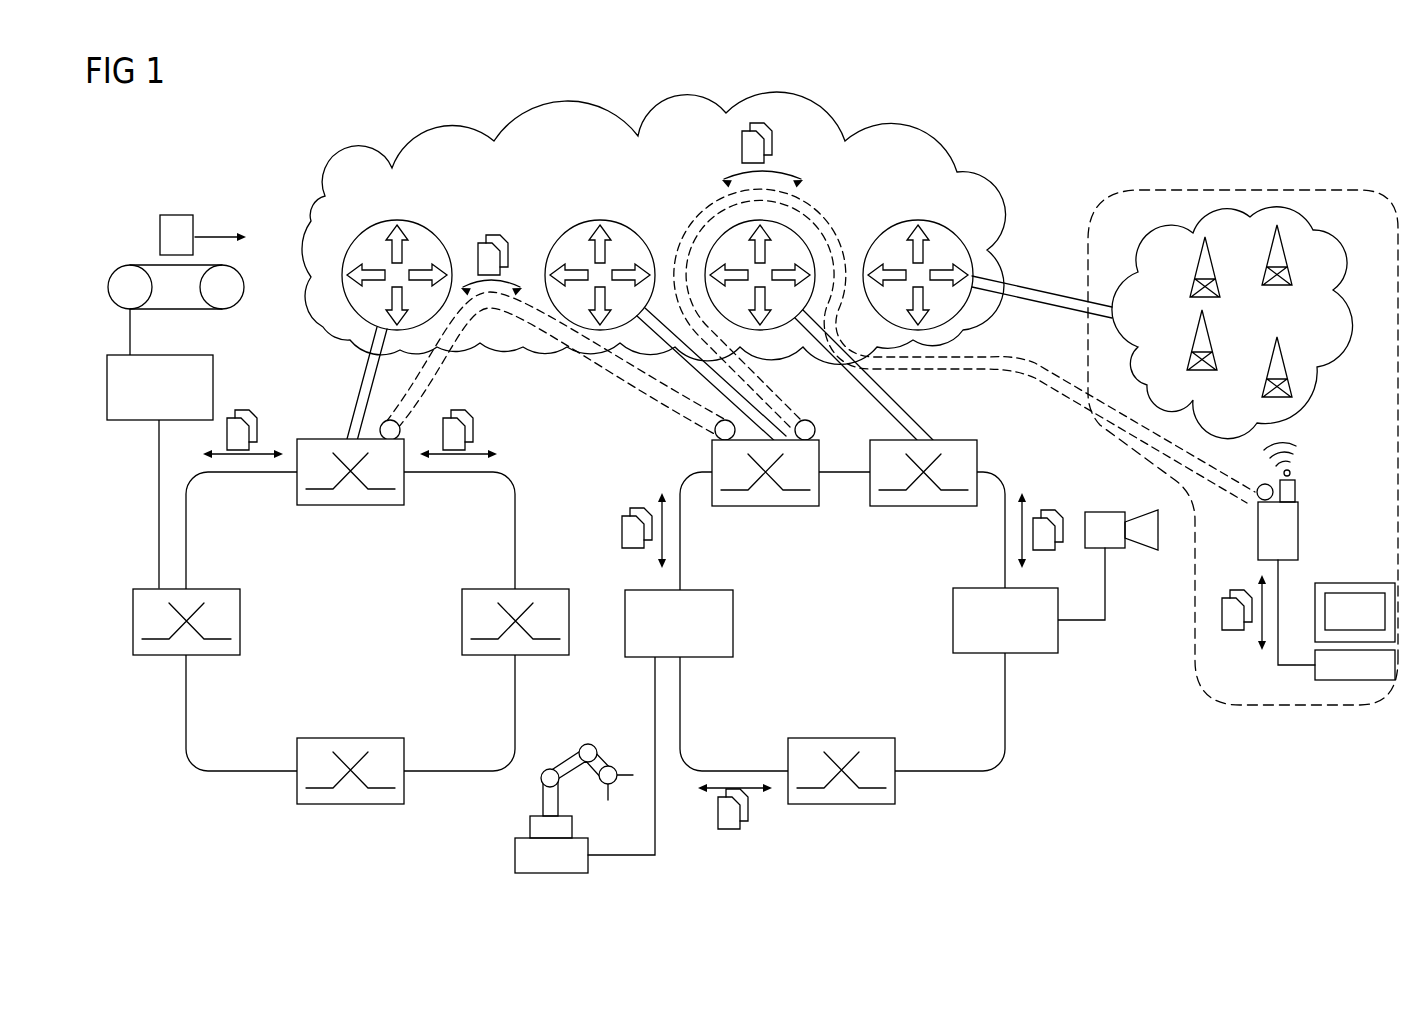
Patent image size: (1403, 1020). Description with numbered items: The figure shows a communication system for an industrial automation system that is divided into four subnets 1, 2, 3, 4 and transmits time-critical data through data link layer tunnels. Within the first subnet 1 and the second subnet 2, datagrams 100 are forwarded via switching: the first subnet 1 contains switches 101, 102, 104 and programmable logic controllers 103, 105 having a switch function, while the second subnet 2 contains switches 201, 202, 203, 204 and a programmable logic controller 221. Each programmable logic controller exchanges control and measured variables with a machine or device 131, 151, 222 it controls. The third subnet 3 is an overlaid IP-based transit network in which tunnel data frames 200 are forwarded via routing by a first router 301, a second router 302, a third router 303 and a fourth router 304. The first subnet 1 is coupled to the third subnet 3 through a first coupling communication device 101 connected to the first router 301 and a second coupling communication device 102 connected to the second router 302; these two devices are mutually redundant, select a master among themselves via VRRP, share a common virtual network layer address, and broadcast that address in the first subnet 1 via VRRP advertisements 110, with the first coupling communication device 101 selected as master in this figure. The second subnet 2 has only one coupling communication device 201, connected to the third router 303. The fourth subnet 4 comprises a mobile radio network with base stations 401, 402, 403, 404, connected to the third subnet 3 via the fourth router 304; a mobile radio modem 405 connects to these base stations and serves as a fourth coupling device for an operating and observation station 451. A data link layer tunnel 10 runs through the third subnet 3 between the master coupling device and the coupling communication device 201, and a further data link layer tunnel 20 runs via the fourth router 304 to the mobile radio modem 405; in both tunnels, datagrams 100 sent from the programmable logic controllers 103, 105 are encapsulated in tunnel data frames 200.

The first subnet 1 is at (973, 794).
The second subnet 2 is at (230, 794).
The third subnet 3 is at (885, 124).
The fourth subnet 4 is at (1252, 190).
The data link layer tunnel 10 is at (638, 386).
The further data link layer tunnel 20 is at (1000, 372).
The datagrams 100 is at (246, 417).
The first coupling communication device 101 is at (765, 508).
The second coupling communication device 102 is at (925, 508).
The programmable logic controller 103 is at (735, 622).
The switch 104 is at (846, 737).
The programmable logic controller 105 is at (952, 622).
The VRRP advertisements 110 is at (732, 836).
The machine or device 131 is at (515, 856).
The machine or device 151 is at (1105, 510).
The tunnel data frames 200 is at (488, 235).
The coupling communication device 201 is at (350, 507).
The switch 202 is at (240, 624).
The switch 203 is at (349, 736).
The switch 204 is at (461, 624).
The programmable logic controller 221 is at (120, 422).
The machine or device 222 is at (119, 264).
The first router 301 is at (598, 220).
The second router 302 is at (784, 242).
The third router 303 is at (408, 228).
The fourth router 304 is at (911, 225).
The base station 401 is at (1211, 300).
The base station 402 is at (1276, 285).
The base station 403 is at (1300, 380).
The base station 404 is at (1197, 319).
The mobile radio modem 405 is at (1298, 532).
The operating and observation station 451 is at (1351, 693).